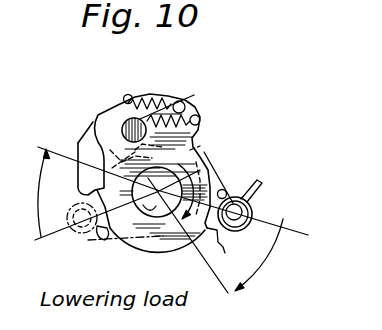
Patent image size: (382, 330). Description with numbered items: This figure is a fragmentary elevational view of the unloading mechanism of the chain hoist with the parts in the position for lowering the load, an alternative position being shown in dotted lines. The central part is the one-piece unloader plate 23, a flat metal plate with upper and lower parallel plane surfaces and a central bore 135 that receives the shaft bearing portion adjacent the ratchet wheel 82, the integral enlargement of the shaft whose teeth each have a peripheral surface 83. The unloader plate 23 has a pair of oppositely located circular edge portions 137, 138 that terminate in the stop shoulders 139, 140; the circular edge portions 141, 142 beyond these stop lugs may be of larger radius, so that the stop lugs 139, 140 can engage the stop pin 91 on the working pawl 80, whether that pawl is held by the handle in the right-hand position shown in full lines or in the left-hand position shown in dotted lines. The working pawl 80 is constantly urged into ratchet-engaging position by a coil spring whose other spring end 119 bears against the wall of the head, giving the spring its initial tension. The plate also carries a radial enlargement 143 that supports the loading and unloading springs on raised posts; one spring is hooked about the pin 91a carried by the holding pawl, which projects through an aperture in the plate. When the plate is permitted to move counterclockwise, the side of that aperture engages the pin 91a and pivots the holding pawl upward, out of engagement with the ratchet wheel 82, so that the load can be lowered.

The unloader plate 23 is at (192, 130).
The working pawl 80 is at (258, 182).
The ratchet wheel 82 is at (199, 167).
The peripheral surface 83 is at (163, 252).
The stop pin 91 is at (228, 189).
The pin 91a is at (132, 119).
The spring end 119 is at (262, 195).
The central bore 135 is at (94, 239).
The circular edge portion 137 is at (230, 178).
The circular edge portion 138 is at (57, 193).
The stop shoulder 139 is at (232, 240).
The stop shoulder 140 is at (97, 162).
The circular edge portion 141 is at (195, 243).
The circular edge portion 142 is at (105, 155).
The radial enlargement 143 is at (194, 96).